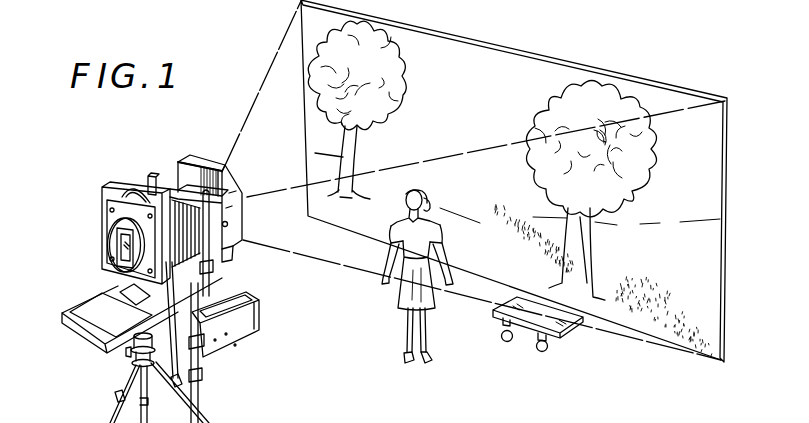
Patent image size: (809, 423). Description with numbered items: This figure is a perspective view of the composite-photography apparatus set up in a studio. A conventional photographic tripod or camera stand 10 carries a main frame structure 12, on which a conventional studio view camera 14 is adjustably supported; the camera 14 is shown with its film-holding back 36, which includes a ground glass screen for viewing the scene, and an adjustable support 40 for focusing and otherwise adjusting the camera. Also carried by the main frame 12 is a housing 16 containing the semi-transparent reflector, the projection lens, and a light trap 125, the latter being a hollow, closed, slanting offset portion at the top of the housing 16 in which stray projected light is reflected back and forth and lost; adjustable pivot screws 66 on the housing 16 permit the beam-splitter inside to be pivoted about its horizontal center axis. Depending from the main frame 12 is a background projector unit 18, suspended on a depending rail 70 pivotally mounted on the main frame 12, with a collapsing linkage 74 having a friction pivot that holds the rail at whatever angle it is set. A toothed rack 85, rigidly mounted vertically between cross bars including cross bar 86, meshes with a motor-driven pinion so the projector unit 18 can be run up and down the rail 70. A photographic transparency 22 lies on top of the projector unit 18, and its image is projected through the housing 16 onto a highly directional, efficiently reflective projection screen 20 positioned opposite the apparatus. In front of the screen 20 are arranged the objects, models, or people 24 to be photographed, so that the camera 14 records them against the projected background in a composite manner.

The photographic tripod or camera stand 10 is at (148, 378).
The main frame structure 12 is at (73, 336).
The photographic camera 14 is at (169, 277).
The housing 16 is at (233, 196).
The background projector unit 18 is at (240, 314).
The projection screen 20 is at (604, 74).
The photographic transparency 22 is at (214, 300).
The objects or models or people 24 is at (437, 230).
The film-holding back 36 is at (105, 230).
The adjustable support 40 is at (207, 268).
The adjustable pivot screws 66 is at (228, 225).
The depending rail 70 is at (200, 394).
The collapsing linkage 74 is at (198, 346).
The toothed rack 85 is at (200, 378).
The cross bar 86 is at (155, 393).
The light trap 125 is at (222, 171).